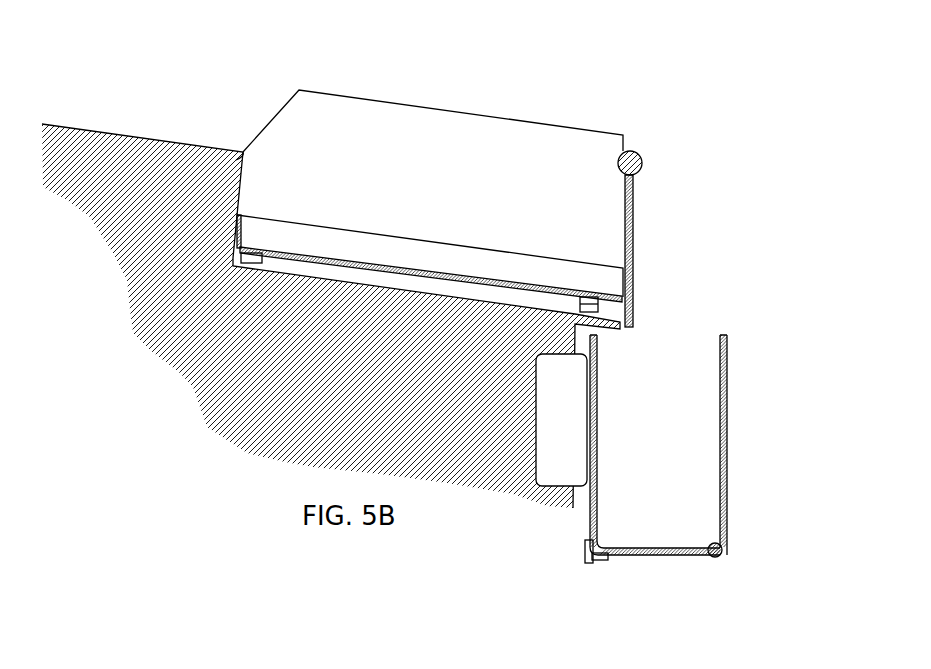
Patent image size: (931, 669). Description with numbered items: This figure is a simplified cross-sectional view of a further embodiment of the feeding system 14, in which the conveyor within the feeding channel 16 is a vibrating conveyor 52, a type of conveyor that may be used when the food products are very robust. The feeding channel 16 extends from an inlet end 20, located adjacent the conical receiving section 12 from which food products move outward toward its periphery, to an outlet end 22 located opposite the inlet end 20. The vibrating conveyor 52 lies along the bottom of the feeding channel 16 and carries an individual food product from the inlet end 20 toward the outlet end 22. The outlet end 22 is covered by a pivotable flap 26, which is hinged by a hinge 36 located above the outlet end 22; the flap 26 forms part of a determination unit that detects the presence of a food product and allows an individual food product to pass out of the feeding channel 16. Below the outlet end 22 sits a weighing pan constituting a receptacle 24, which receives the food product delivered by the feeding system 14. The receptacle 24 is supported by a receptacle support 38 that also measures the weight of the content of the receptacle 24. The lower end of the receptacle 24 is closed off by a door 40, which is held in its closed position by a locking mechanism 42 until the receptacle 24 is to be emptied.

The receiving section 12 is at (173, 120).
The feeding system 14 is at (494, 82).
The feeding channel 16 is at (340, 205).
The inlet end 20 is at (240, 172).
The outlet end 22 is at (603, 228).
The receptacle 24 is at (742, 399).
The flap 26 is at (635, 307).
The hinge 36 is at (643, 165).
The receptacle support 38 is at (572, 410).
The door 40 is at (667, 556).
The locking mechanism 42 is at (612, 560).
The vibrating conveyor 52 is at (308, 252).